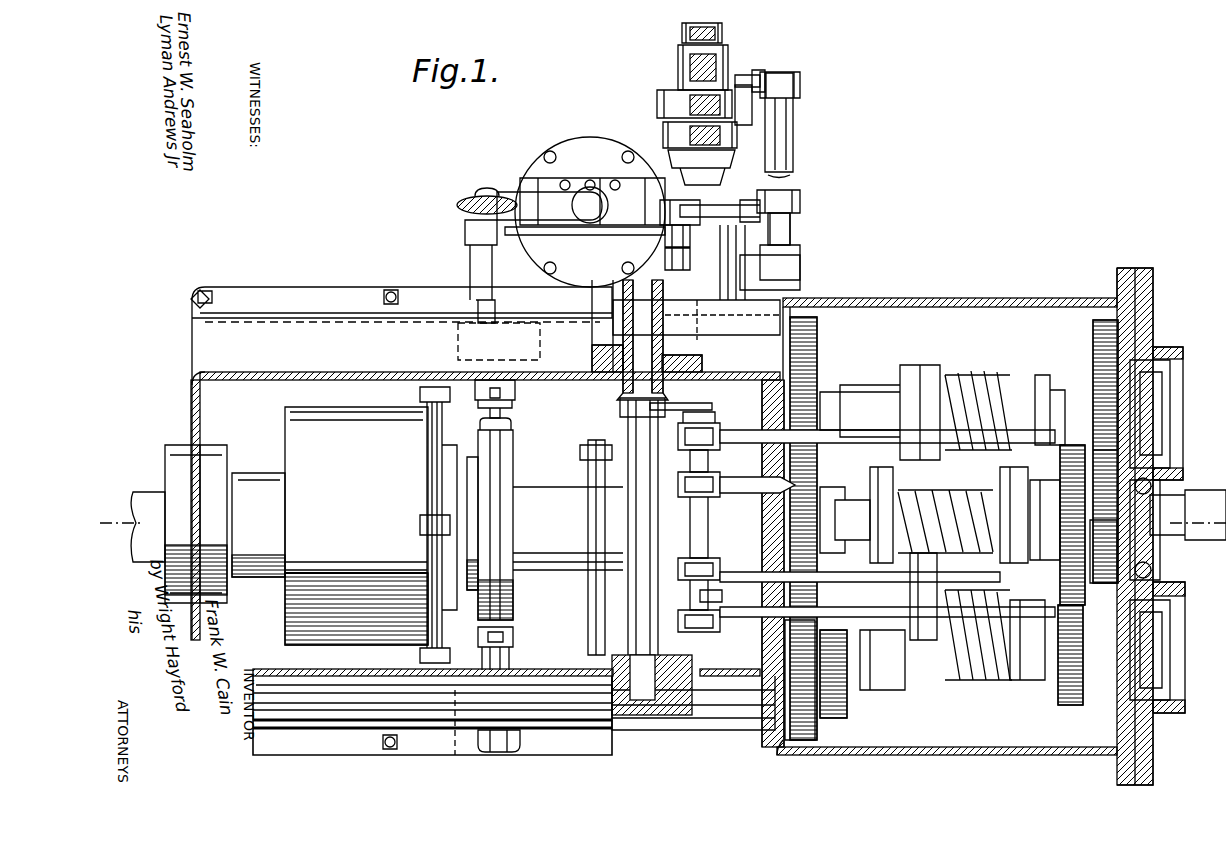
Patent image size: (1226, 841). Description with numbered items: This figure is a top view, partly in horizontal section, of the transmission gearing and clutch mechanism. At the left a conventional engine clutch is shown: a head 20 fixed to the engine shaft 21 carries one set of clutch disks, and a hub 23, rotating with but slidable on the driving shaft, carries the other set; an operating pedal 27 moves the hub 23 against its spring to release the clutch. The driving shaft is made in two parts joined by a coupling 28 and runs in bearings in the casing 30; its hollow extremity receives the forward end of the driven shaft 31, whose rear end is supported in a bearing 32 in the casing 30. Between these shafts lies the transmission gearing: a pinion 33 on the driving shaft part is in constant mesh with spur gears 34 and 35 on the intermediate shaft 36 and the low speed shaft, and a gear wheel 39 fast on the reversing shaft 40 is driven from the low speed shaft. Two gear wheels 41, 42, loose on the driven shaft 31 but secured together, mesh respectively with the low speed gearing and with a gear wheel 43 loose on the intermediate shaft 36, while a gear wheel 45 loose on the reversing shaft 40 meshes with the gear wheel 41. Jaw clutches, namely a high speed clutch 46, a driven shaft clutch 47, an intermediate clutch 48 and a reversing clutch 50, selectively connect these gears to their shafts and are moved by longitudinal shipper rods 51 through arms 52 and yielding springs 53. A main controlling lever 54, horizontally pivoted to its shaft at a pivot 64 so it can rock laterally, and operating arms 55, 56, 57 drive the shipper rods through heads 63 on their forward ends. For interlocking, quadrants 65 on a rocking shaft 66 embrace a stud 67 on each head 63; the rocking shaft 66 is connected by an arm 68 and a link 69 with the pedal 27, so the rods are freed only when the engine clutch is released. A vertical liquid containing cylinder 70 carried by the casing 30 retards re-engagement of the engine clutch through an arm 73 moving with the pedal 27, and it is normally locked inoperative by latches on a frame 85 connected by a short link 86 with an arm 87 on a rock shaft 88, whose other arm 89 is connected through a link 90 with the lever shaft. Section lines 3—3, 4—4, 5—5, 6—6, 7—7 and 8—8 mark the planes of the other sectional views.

The section line 3— 3 is at (1225, 652).
The section line 4— 4 is at (923, 790).
The section line 5— 5 is at (1110, 790).
The section line 6— 6 is at (697, 790).
The section line 7— 7 is at (583, 790).
The section line 8— 8 is at (880, 212).
The head 20 is at (356, 526).
The engine shaft 21 is at (145, 496).
The hub 23 is at (458, 507).
The operating pedal 27 is at (482, 193).
The coupling 28 is at (587, 547).
The casing 30 is at (634, 358).
The driven shaft 31 is at (1195, 508).
The bearing 32 is at (1185, 582).
The pinion 33 is at (792, 522).
The spur gear 34 is at (817, 528).
The spur gear 35 is at (830, 692).
The intermediate shaft 36 is at (872, 396).
The gear wheel 39 is at (820, 722).
The reversing shaft 40 is at (885, 665).
The gear wheel 41 is at (1062, 582).
The gear wheel 42 is at (1103, 563).
The gear wheel 43 is at (1092, 451).
The gear wheel 45 is at (1068, 704).
The high speed clutch 46 is at (845, 520).
The driven shaft clutch 47 is at (1034, 490).
The intermediate clutch 48 is at (1050, 401).
The reversing clutch 50 is at (1031, 648).
The shipper rods 51 is at (832, 443).
The arms 52 is at (898, 520).
The yielding springs 53 is at (982, 374).
The main controlling lever 54 is at (691, 102).
The operating arm 55 is at (690, 130).
The operating arm 56 is at (682, 58).
The operating arm 57 is at (684, 32).
The heads 63 is at (697, 552).
The pivot 64 is at (748, 78).
The quadrants 65 is at (690, 420).
The rocking shaft 66 is at (642, 437).
The stud 67 is at (716, 403).
The arm 68 is at (692, 255).
The link 69 is at (466, 228).
The liquid containing cylinder 70 is at (590, 203).
The arm 73 is at (581, 213).
The frame 85 is at (668, 204).
The short link 86 is at (737, 208).
The arm 87 is at (803, 194).
The rock shaft 88 is at (795, 133).
The arm 89 is at (802, 88).
The link 90 is at (758, 75).